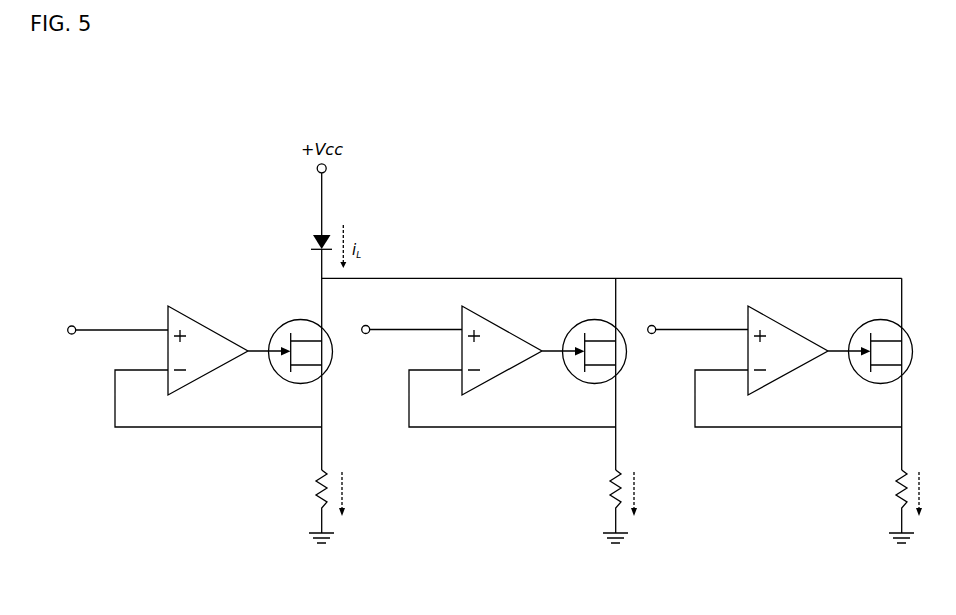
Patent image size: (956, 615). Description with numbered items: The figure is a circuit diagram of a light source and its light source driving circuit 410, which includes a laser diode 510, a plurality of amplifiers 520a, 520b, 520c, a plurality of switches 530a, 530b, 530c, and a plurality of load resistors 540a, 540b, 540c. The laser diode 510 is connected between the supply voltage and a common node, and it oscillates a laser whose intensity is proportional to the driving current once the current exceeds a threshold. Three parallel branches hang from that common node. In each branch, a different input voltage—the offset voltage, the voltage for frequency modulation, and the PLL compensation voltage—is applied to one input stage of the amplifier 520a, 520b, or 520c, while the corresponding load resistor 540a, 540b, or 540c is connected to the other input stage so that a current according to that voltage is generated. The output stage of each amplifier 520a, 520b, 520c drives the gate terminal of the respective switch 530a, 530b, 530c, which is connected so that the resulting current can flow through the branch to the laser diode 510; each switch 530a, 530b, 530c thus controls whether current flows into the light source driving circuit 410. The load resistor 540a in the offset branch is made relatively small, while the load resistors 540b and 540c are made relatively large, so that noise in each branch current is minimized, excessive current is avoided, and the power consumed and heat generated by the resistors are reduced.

The light source driving circuit 410 is at (519, 90).
The laser diode 510 is at (318, 246).
The amplifier 520a is at (168, 325).
The amplifier 520b is at (498, 340).
The amplifier 520c is at (783, 340).
The switch 530a is at (293, 330).
The switch 530b is at (595, 338).
The switch 530c is at (880, 338).
The load resistor 540a is at (318, 494).
The load resistor 540b is at (610, 496).
The load resistor 540c is at (895, 496).